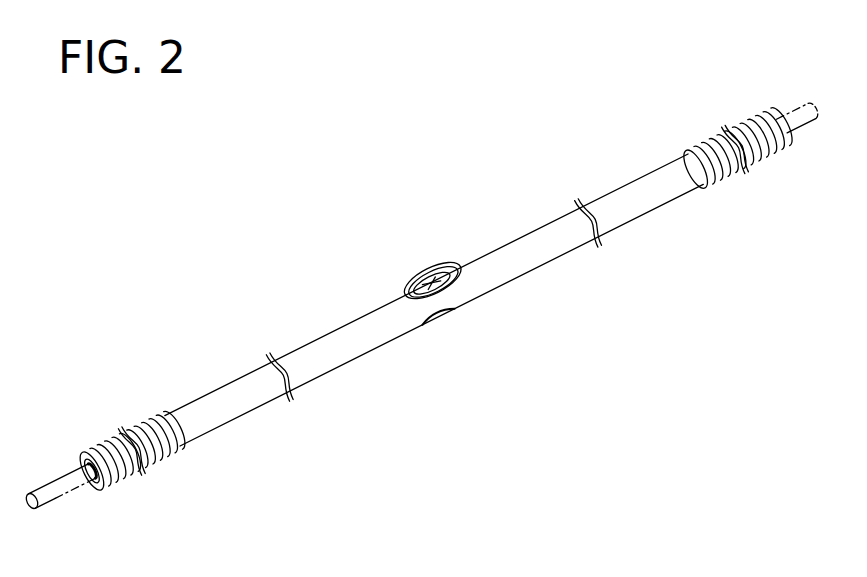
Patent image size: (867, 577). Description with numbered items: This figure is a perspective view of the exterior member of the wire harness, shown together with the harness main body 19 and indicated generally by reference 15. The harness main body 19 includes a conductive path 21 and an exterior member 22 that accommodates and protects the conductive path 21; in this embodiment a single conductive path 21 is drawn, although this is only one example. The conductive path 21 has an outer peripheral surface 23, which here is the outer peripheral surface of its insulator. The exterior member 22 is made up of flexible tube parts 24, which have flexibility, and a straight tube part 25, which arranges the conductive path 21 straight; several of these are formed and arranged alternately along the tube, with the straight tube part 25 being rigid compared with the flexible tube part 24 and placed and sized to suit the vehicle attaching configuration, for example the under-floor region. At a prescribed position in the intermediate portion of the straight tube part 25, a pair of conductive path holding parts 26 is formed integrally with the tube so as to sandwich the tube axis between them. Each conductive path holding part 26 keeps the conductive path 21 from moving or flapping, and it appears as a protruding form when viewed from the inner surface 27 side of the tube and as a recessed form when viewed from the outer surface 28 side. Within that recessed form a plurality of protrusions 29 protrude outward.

The wire harness 15 is at (316, 194).
The harness main body 19 is at (320, 280).
The conductive path 21 is at (43, 482).
The exterior member 22 is at (518, 234).
The outer peripheral surface 23 is at (50, 493).
The flexible tube part 24 is at (152, 468).
The straight tube part 25 is at (336, 358).
The conductive path holding part 26 is at (438, 283).
The inner surface 27 is at (480, 284).
The outer surface 28 is at (520, 262).
The protrusion 29 is at (406, 291).